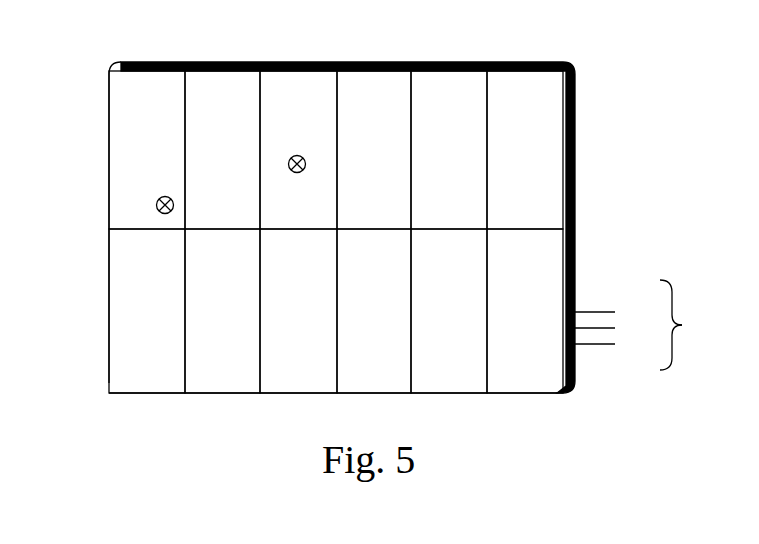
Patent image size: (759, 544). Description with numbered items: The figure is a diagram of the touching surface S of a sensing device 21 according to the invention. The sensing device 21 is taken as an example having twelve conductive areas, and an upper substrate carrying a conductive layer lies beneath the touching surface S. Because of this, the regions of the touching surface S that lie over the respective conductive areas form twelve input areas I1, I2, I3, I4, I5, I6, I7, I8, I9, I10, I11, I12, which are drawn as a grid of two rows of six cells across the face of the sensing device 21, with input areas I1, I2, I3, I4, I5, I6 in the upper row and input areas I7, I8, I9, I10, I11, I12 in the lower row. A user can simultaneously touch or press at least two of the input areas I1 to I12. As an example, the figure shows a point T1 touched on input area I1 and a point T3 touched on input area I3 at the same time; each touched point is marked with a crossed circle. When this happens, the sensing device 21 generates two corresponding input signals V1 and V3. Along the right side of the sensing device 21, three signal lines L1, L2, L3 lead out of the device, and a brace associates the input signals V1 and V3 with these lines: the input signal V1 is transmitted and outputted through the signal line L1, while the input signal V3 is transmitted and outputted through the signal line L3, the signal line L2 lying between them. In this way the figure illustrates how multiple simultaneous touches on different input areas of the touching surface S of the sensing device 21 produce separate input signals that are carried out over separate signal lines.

The sensing device 21 is at (53, 385).
The touching surface S is at (223, 62).
The input area I1 is at (147, 150).
The input area I2 is at (222, 150).
The input area I3 is at (298, 150).
The input area I4 is at (374, 150).
The input area I5 is at (449, 150).
The input area I6 is at (525, 150).
The input area I7 is at (147, 311).
The input area I8 is at (222, 311).
The input area I9 is at (298, 311).
The input area I10 is at (374, 311).
The input area I11 is at (449, 311).
The input area I12 is at (525, 311).
The point T1 is at (156, 205).
The point T3 is at (291, 171).
The signal line L1 is at (611, 296).
The signal line L2 is at (611, 327).
The signal line L3 is at (611, 357).
The input signal V1 is at (686, 302).
The input signal V3 is at (686, 347).